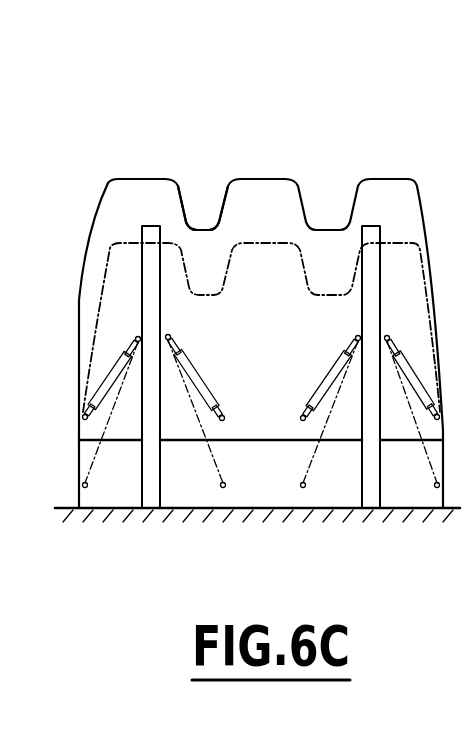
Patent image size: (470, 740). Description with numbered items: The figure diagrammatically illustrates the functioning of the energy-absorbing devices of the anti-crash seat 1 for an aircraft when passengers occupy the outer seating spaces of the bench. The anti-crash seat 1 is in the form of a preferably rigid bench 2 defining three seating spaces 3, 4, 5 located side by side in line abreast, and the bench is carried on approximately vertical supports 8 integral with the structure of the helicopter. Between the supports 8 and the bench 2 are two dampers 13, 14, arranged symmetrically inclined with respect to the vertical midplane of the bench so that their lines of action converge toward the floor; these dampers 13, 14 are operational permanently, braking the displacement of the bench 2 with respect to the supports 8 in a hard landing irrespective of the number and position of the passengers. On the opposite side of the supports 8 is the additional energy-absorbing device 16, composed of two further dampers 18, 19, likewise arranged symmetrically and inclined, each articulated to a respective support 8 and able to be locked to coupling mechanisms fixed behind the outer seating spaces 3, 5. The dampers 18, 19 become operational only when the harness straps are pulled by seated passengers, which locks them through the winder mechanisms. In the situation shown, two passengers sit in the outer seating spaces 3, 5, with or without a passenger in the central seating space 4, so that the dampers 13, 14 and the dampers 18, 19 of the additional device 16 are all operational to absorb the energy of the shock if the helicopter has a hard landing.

The anti-crash seat 1 is at (261, 275).
The bench 2 is at (185, 192).
The seating space 3 is at (130, 190).
The seating space 4 is at (262, 190).
The seating space 5 is at (375, 190).
The support 8 is at (160, 492).
The damper 13 is at (202, 388).
The damper 14 is at (318, 383).
The additional energy-absorbing device 16 is at (105, 364).
The damper 18 is at (97, 388).
The damper 19 is at (403, 358).